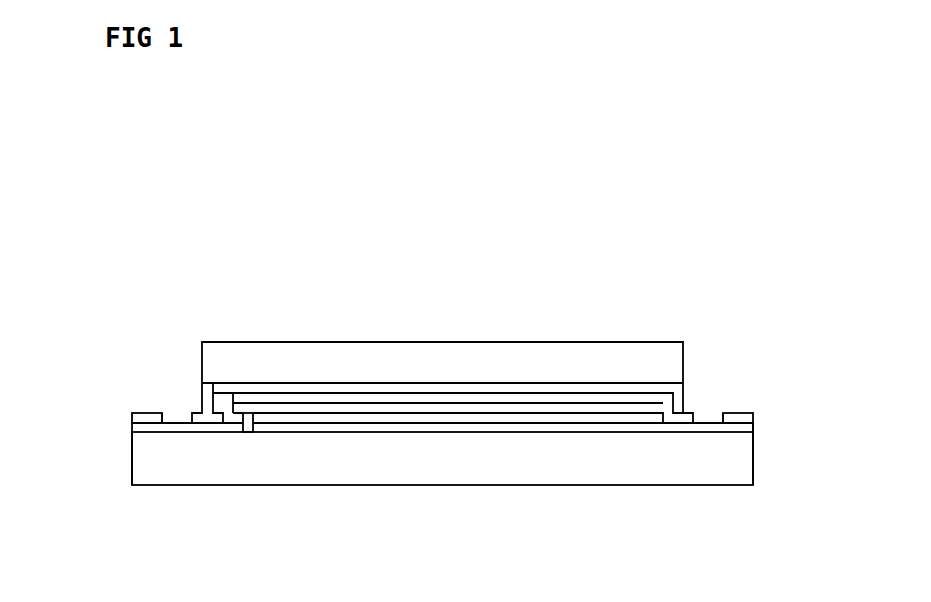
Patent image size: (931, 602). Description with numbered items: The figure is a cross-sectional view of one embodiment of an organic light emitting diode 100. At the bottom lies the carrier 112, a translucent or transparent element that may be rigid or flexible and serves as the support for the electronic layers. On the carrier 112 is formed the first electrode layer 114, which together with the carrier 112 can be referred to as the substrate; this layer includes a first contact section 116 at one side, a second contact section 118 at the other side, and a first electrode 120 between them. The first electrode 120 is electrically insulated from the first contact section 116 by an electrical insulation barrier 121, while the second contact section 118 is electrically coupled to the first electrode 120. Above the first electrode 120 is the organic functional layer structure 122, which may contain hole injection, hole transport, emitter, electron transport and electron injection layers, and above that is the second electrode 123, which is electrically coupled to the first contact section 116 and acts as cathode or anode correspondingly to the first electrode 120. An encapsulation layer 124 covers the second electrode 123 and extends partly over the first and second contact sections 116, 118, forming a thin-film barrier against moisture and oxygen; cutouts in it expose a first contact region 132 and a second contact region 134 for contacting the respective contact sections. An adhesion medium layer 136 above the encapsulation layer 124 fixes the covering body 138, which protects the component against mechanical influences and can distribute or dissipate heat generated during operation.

The organic light emitting diode 100 is at (753, 322).
The carrier 112 is at (518, 480).
The first electrode layer 114 is at (755, 427).
The first contact section 116 is at (193, 430).
The second contact section 118 is at (723, 432).
The first electrode 120 is at (380, 430).
The electrical insulation barrier 121 is at (250, 432).
The organic functional layer structure 122 is at (588, 417).
The second electrode 123 is at (463, 407).
The encapsulation layer 124 is at (132, 418).
The first contact region 132 is at (183, 420).
The second contact region 134 is at (710, 423).
The adhesion medium layer 136 is at (360, 388).
The covering body 138 is at (487, 355).